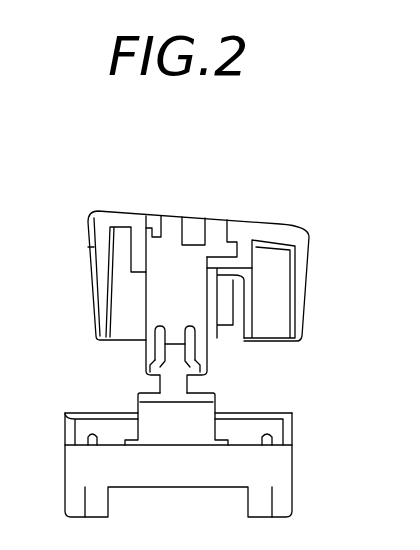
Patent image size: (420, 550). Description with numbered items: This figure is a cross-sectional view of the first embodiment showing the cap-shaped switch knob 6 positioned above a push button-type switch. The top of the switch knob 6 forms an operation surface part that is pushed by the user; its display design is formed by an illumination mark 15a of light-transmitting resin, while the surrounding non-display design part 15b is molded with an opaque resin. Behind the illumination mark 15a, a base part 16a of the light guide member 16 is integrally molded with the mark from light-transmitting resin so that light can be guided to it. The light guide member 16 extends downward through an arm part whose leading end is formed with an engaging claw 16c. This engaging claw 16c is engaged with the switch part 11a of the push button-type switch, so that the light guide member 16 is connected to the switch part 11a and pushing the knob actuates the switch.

The switch knob 6 is at (280, 224).
The illumination mark 15a is at (208, 216).
The non-display design part 15b is at (132, 218).
The light guide member 16 is at (157, 300).
The base part 16a is at (167, 242).
The engaging claw 16c is at (190, 366).
The switch part 11a is at (172, 355).